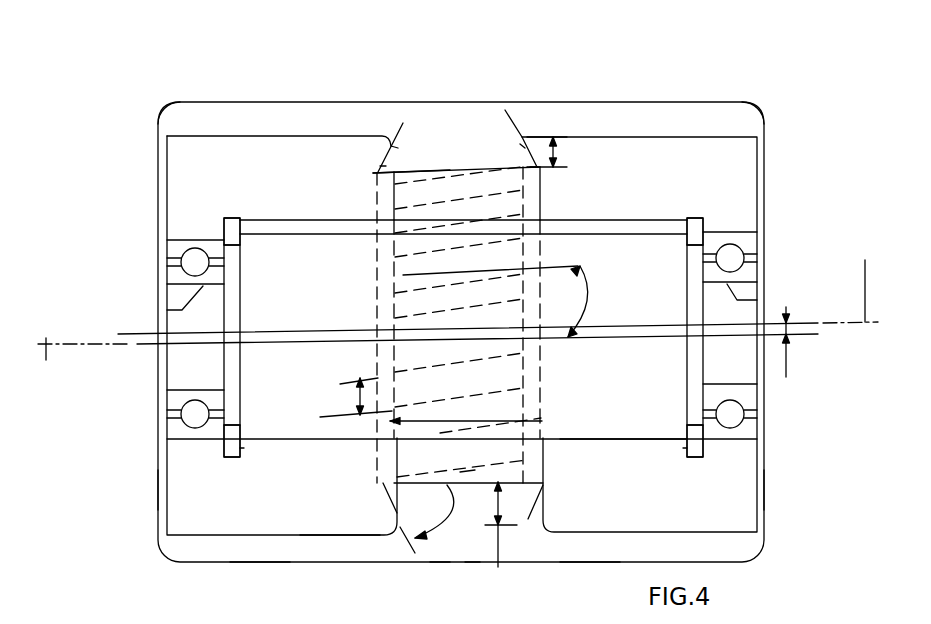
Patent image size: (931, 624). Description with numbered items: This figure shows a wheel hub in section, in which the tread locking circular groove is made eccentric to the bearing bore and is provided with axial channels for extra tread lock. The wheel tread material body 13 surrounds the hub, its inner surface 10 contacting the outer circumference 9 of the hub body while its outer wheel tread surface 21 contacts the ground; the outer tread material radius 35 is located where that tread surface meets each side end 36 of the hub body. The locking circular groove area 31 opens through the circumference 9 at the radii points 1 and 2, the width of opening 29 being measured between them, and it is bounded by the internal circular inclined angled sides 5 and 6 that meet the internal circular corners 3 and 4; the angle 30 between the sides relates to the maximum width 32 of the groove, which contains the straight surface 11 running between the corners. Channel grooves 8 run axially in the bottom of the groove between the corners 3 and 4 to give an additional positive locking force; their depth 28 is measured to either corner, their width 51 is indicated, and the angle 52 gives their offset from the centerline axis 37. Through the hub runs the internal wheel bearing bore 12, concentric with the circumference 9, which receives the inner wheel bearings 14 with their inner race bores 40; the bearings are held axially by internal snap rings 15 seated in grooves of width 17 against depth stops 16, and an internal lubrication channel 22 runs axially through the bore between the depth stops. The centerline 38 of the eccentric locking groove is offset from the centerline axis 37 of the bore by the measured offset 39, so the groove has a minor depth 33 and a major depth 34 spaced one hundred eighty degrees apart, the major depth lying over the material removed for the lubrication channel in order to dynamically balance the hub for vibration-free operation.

The radii point 1 is at (403, 123).
The radii point 2 is at (505, 110).
The internal circular corner 3 is at (383, 166).
The internal circular corner 4 is at (534, 167).
The internal circular inclined angled side 5 is at (397, 148).
The internal circular inclined angled side 6 is at (522, 146).
The channel grooves 8 is at (460, 472).
The outer circumference 9 is at (337, 534).
The inner surface of the wheel tread body 10 is at (261, 537).
The straight surface 11 is at (452, 172).
The internal wheel bearing bore 12 is at (627, 436).
The wheel tread material body 13 is at (441, 538).
The inner wheel bearings 14 is at (175, 277).
The internal snap rings 15 is at (229, 218).
The depth stops 16 is at (243, 448).
The groove widths for the internal snap rings 17 is at (235, 460).
The outer wheel tread surface 21 is at (587, 562).
The internal lubrication channel 22 is at (463, 257).
The depth of the channels 28 is at (373, 173).
The width of opening 29 is at (488, 273).
The angle between the internal circular inclined angle sides 30 is at (458, 492).
The locking circular groove area 31 is at (472, 512).
The maximum width of the locking circular groove 32 is at (466, 409).
The minor depth 33 is at (568, 152).
The major depth 34 is at (503, 542).
The outer tread material radius 35 is at (158, 104).
The side end 36 is at (158, 492).
The centerline axis 37 is at (82, 346).
The centerline of the eccentric locking groove 38 is at (498, 284).
The amount of measured offset 39 is at (787, 372).
The inner race bore 40 is at (170, 310).
The width of channels 51 is at (340, 403).
The angle of offset of channels 52 is at (586, 297).